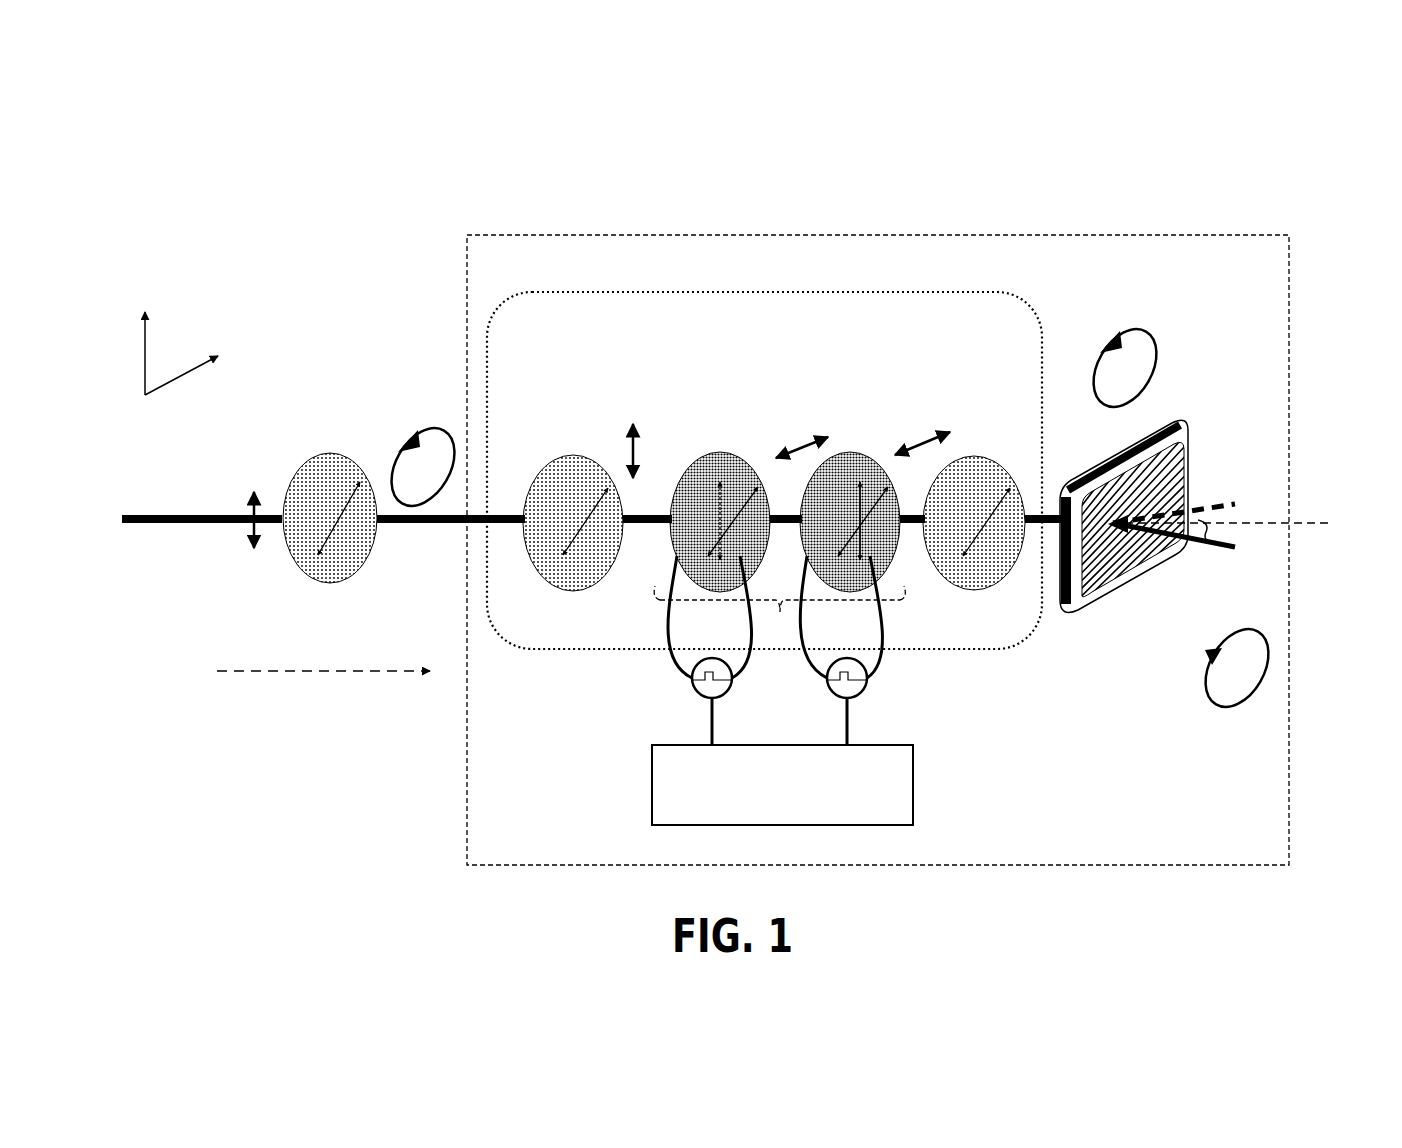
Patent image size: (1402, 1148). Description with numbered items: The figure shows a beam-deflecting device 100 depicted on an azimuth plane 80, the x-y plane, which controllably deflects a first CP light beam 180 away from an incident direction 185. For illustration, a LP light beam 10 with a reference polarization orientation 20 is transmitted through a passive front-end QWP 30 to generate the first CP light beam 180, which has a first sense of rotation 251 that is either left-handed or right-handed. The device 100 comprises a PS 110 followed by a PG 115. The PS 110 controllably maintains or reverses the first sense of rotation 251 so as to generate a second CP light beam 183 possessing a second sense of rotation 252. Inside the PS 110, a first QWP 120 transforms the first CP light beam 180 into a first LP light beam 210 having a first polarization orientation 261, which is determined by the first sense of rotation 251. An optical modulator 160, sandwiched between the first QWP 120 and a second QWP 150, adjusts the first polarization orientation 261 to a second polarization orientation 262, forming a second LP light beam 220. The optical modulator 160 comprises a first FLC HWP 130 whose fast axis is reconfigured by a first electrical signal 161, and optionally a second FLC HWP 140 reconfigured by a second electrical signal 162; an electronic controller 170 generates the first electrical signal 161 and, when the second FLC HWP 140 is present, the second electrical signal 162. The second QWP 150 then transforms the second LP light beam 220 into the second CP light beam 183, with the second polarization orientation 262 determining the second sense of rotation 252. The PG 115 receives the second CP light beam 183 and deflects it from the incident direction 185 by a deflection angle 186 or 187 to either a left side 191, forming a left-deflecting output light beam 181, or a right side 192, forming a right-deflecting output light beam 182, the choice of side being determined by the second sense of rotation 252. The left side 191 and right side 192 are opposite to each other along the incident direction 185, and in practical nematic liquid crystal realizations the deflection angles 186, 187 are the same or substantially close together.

The LP light beam 10 is at (201, 585).
The polarization orientation 20 is at (250, 512).
The front-end QWP 30 is at (335, 518).
The azimuth plane 80 is at (198, 291).
The beam-deflecting device 100 is at (480, 238).
The PS 110 is at (505, 650).
The PG 115 is at (1200, 567).
The first QWP 120 is at (597, 515).
The first FLC HWP 130 is at (707, 449).
The second FLC HWP 140 is at (838, 449).
The second QWP 150 is at (974, 519).
The optical modulator 160 is at (934, 695).
The first electrical signal 161 is at (678, 650).
The second electrical signal 162 is at (811, 650).
The electronic controller 170 is at (782, 785).
The first CP light beam 180 is at (451, 556).
The left-deflecting output light beam 181 is at (1176, 483).
The right-deflecting output light beam 182 is at (1171, 572).
The second CP light beam 183 is at (1057, 447).
The incident direction 185 is at (305, 673).
The deflection angle 186 is at (1238, 500).
The deflection angle 187 is at (1281, 542).
The left side 191 is at (1340, 409).
The right side 192 is at (1283, 679).
The first LP light beam 210 is at (680, 514).
The second LP light beam 220 is at (898, 514).
The first sense of rotation 251 is at (423, 450).
The second sense of rotation 252 is at (1128, 349).
The first polarization orientation 261 is at (672, 451).
The second polarization orientation 262 is at (925, 422).